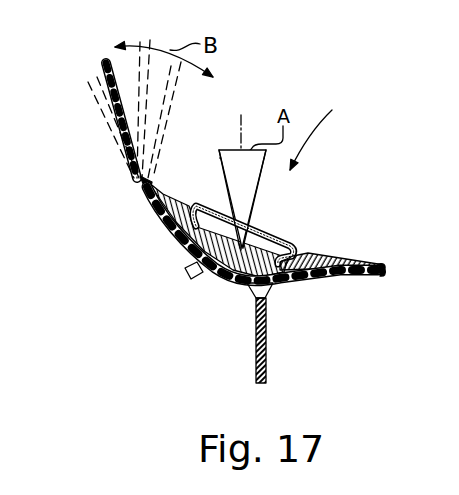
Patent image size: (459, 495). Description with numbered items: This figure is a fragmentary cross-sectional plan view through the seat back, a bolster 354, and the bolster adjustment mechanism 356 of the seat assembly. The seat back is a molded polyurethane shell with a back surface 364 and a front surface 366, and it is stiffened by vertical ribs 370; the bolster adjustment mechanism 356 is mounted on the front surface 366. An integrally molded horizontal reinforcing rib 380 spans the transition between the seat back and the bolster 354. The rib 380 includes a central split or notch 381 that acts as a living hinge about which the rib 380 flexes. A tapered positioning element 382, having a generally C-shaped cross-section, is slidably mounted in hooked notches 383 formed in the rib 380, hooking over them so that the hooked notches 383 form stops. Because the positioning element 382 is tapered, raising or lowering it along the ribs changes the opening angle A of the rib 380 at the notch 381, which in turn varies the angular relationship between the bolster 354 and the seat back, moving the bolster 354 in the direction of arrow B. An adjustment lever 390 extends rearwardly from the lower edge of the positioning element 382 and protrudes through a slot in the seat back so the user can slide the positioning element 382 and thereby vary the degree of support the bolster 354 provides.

The bolster 354 is at (113, 97).
The bolster adjustment mechanism 356 is at (335, 126).
The back surface 364 is at (330, 286).
The front surface 366 is at (343, 260).
The vertical rib 370 is at (268, 336).
The reinforcing rib 380 is at (163, 195).
The central split or notch 381 is at (238, 284).
The tapered positioning element 382 is at (282, 238).
The hooked notch 383 is at (183, 222).
The adjustment lever 390 is at (190, 278).